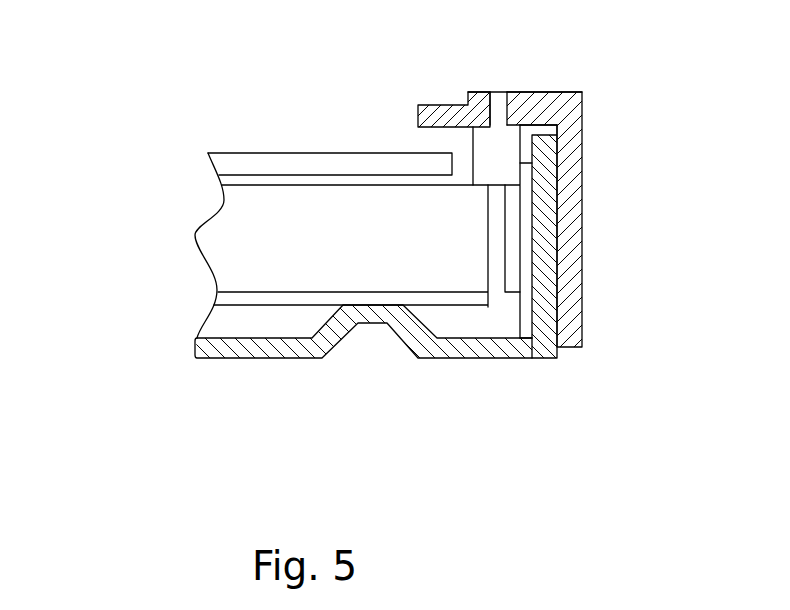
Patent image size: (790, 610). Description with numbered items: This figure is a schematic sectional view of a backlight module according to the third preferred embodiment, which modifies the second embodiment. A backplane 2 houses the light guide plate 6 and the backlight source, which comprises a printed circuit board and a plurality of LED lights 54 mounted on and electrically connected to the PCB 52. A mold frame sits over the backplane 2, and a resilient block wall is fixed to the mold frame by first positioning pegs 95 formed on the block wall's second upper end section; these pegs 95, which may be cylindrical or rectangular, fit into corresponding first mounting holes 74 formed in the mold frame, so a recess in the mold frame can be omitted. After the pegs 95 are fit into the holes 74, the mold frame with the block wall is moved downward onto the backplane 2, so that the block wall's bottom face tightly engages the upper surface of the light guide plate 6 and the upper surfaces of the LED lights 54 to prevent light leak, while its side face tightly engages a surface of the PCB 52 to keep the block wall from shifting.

The backplane 2 is at (297, 357).
The light guide plate 6 is at (235, 243).
The printed circuit board 52 is at (527, 318).
The LED lights 54 is at (513, 262).
The first mounting holes 74 is at (497, 92).
The first positioning pegs 95 is at (495, 108).